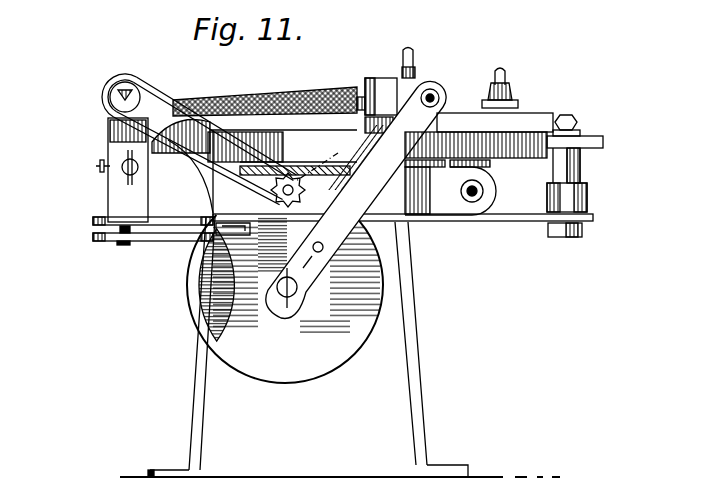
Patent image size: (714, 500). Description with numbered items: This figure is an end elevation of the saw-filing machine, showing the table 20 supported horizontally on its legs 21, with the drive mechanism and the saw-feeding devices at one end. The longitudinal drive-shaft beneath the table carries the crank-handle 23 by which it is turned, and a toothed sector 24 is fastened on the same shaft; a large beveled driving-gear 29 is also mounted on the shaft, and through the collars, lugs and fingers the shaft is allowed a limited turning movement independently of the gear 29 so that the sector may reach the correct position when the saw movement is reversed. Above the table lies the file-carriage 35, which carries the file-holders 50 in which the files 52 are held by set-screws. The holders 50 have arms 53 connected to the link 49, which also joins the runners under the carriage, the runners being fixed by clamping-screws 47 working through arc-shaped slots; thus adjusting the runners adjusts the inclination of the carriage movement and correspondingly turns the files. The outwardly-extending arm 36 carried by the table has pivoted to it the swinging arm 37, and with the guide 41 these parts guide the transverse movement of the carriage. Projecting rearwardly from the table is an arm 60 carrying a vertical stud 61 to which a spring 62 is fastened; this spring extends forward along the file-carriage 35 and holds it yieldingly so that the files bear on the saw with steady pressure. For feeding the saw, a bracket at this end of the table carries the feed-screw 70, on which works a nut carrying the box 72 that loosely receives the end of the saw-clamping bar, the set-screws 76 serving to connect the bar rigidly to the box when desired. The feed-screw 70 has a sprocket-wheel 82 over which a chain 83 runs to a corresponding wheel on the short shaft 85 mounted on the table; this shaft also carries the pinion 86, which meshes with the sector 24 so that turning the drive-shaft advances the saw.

The table 20 is at (209, 182).
The legs 21 is at (207, 398).
The crank-handle 23 is at (365, 203).
The toothed sector 24 is at (383, 265).
The beveled driving-gear 29 is at (285, 299).
The file-carriage 35 is at (523, 127).
The outwardly-extending arm 36 is at (163, 241).
The swinging arm 37 is at (157, 218).
The guide 41 is at (284, 150).
The clamping-screw 47 is at (502, 86).
The link 49 is at (515, 104).
The file-holder 50 is at (390, 91).
The file 52 is at (297, 97).
The arm 53 is at (447, 120).
The arm 60 is at (503, 222).
The vertical stud 61 is at (582, 184).
The spring 62 is at (588, 143).
The feed-screw 70 is at (108, 97).
The box 72 is at (122, 200).
The set-screw 76 is at (98, 165).
The sprocket-wheel 82 is at (162, 93).
The chain 83 is at (215, 137).
The short shaft 85 is at (329, 157).
The pinion 86 is at (273, 187).